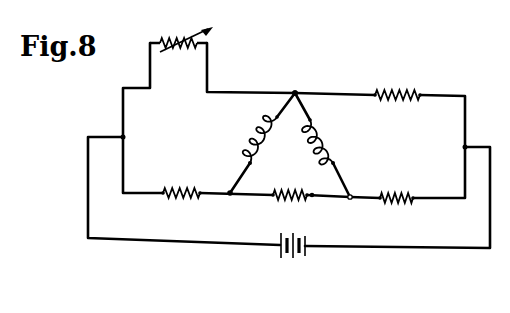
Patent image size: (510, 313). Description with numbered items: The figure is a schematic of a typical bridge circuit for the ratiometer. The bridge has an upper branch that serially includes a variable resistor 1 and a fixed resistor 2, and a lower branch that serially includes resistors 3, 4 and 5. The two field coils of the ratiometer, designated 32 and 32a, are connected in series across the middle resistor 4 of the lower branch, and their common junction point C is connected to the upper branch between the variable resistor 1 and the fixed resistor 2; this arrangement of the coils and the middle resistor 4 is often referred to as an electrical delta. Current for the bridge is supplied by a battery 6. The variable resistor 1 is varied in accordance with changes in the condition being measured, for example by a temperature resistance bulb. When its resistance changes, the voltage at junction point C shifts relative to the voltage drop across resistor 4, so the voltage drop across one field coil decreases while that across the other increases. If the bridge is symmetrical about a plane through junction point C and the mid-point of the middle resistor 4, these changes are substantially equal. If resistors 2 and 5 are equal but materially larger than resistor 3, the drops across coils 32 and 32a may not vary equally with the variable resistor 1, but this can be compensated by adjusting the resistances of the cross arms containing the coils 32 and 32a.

The variable resistor 1 is at (163, 40).
The fixed resistor 2 is at (402, 89).
The resistor 3 is at (190, 199).
The middle resistor 4 is at (282, 201).
The resistor 5 is at (403, 202).
The battery 6 is at (288, 256).
The field coil 32 is at (328, 136).
The field coil 32a is at (250, 151).
The common junction point C is at (296, 90).